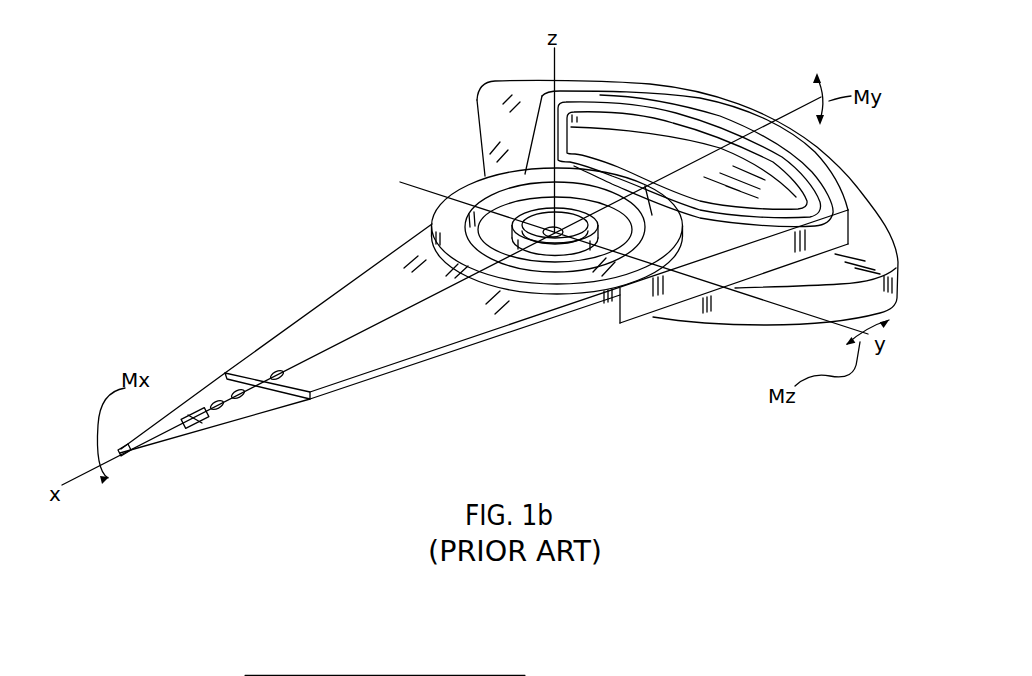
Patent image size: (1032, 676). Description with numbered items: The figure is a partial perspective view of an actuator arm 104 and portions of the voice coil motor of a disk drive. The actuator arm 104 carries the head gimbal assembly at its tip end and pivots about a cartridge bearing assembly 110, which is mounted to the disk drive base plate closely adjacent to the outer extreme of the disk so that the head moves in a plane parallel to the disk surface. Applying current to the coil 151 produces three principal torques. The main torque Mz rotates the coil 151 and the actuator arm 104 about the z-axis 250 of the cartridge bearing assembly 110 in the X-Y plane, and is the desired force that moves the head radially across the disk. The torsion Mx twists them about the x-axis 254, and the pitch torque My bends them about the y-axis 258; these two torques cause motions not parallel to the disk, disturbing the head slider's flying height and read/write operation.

The actuator arm 104 is at (432, 337).
The cartridge bearing assembly 110 is at (557, 240).
The coil 151 is at (678, 110).
The z-axis 250 is at (553, 65).
The x-axis 254 is at (90, 473).
The y-axis 258 is at (741, 306).